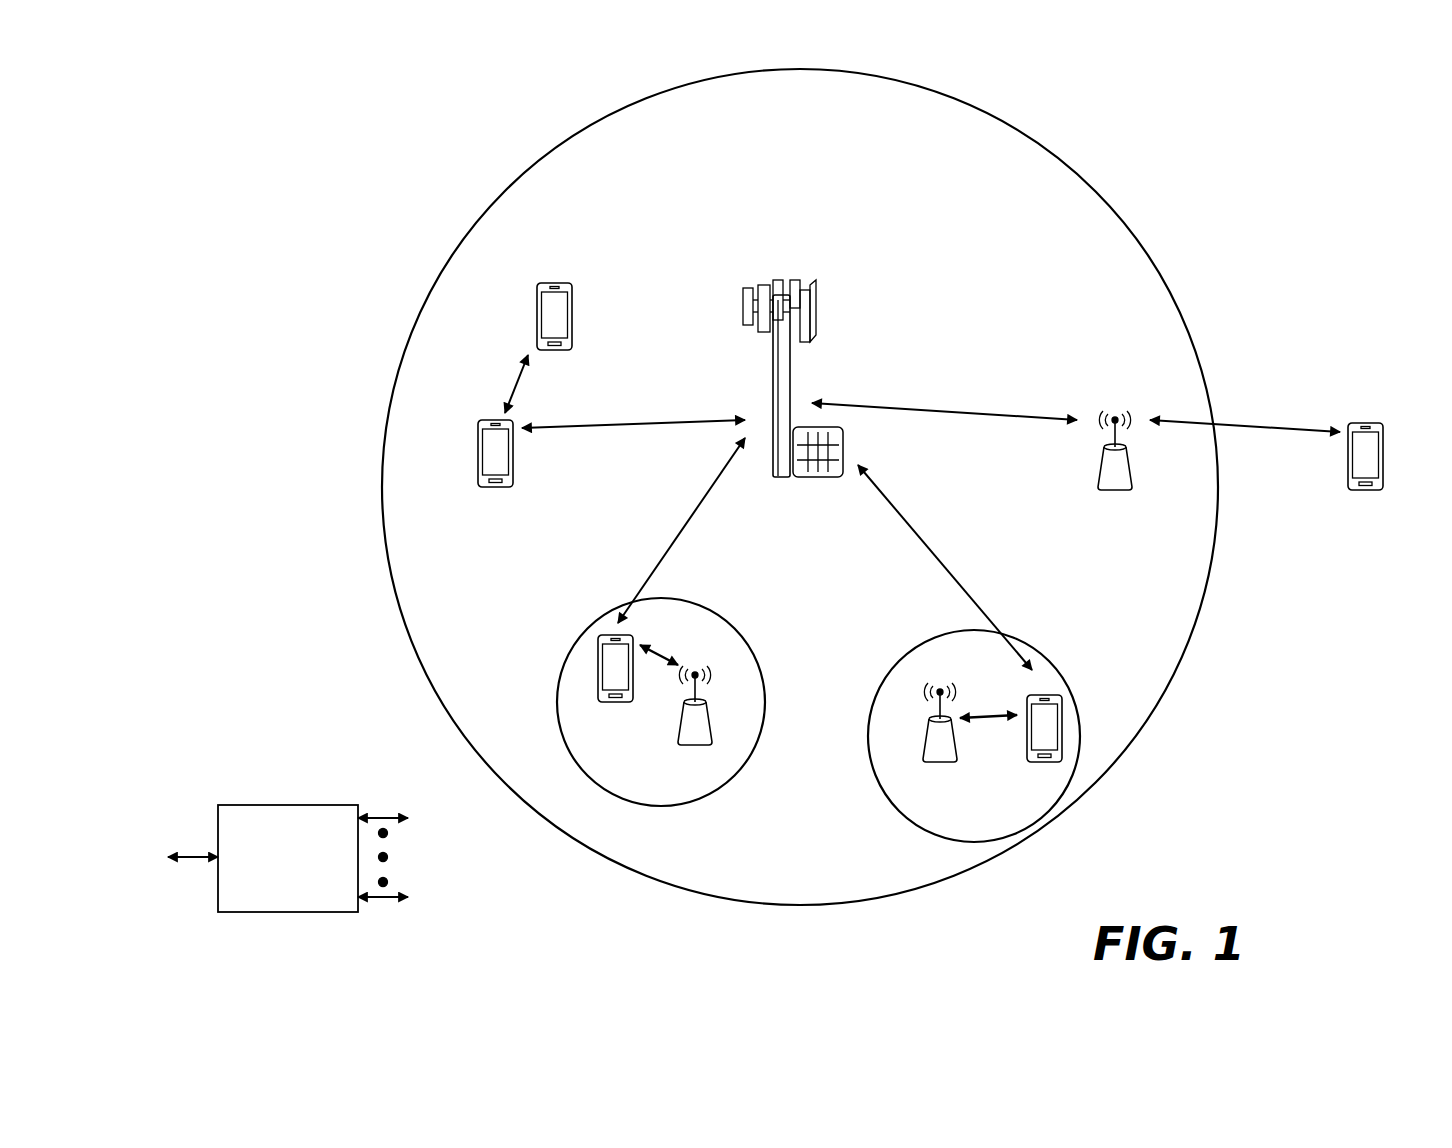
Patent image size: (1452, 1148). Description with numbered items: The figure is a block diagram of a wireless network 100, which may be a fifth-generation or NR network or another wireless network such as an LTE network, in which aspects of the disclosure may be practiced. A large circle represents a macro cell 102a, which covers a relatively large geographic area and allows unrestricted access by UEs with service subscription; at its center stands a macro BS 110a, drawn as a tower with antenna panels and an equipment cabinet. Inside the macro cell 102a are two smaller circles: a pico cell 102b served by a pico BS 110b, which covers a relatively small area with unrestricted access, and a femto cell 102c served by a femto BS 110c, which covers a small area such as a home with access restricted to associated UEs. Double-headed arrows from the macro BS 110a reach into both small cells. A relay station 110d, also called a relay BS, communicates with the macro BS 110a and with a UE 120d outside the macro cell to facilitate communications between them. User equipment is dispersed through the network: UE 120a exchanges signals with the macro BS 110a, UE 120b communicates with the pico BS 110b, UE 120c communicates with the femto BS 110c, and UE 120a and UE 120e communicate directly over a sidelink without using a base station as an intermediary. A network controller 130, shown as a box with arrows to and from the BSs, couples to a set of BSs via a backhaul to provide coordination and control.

The wireless network 100 is at (274, 64).
The macro cell 102a is at (1078, 173).
The pico cell 102b is at (752, 640).
The femto cell 102c is at (910, 647).
The macro BS 110a is at (789, 270).
The pico BS 110b is at (716, 728).
The femto BS 110c is at (924, 748).
The relay station 110d is at (1116, 410).
The UE 120a is at (477, 440).
The UE 120b is at (603, 703).
The UE 120c is at (1033, 763).
The UE 120d is at (1380, 422).
The UE 120e is at (536, 302).
The network controller 130 is at (286, 804).